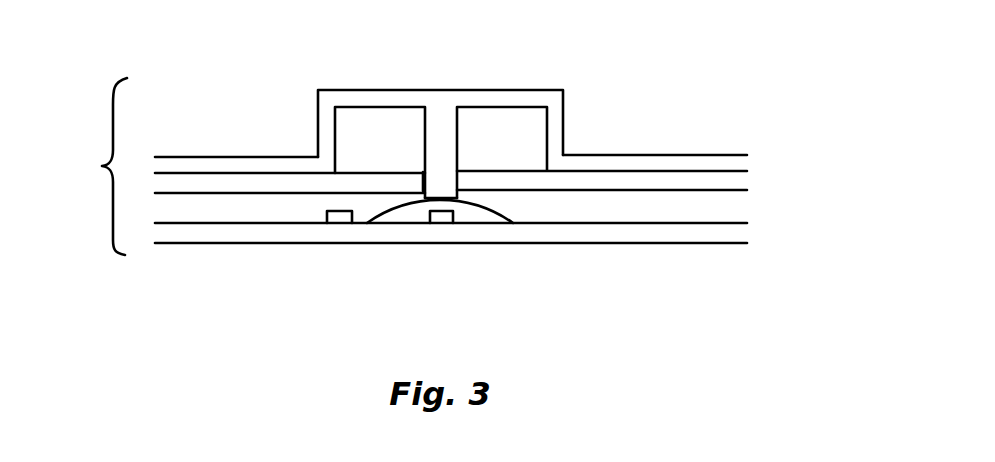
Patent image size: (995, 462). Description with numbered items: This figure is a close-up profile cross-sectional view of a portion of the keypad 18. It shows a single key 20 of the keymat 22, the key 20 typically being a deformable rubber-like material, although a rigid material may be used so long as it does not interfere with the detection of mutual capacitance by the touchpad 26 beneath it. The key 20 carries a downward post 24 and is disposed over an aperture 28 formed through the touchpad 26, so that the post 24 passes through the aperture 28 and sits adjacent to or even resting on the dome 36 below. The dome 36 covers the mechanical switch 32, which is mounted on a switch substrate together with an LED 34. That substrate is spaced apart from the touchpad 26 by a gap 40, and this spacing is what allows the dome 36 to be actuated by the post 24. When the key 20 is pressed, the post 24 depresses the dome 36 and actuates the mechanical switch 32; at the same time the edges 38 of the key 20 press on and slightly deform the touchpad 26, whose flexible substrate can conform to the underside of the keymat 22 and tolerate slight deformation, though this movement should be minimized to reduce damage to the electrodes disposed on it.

The keypad 18 is at (98, 166).
The key 20 is at (558, 128).
The keymat 22 is at (740, 160).
The post 24 is at (443, 145).
The touchpad 26 is at (742, 180).
The aperture 28 is at (423, 172).
The mechanical switch 32 is at (440, 218).
The LED 34 is at (342, 217).
The dome 36 is at (740, 230).
The edges 38 is at (545, 162).
The gap 40 is at (730, 202).